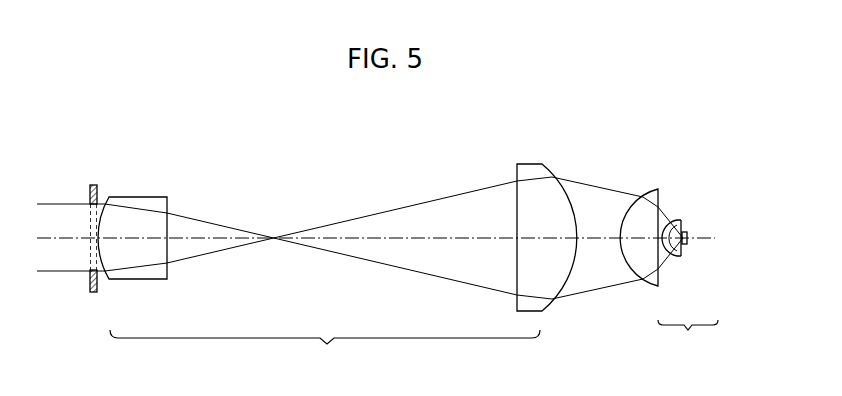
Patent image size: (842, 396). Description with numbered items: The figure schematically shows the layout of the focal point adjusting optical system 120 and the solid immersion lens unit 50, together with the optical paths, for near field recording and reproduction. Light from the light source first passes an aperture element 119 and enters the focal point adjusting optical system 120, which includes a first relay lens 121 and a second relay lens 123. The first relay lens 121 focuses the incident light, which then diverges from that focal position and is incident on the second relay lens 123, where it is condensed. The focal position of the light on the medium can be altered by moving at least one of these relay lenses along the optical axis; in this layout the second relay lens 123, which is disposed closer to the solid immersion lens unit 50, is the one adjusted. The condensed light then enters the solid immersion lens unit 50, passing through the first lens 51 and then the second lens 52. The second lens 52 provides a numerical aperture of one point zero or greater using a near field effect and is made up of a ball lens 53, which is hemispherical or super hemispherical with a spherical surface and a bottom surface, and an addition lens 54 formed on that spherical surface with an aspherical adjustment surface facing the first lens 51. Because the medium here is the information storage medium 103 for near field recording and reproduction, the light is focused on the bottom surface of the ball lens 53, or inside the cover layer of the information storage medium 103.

The solid immersion lens unit 50 is at (672, 243).
The first lens 51 is at (650, 193).
The second lens 52 is at (685, 285).
The ball lens 53 is at (679, 257).
The addition lens 54 is at (666, 257).
The information storage medium for near field recording/reproduction 103 is at (683, 192).
The aperture stop 119 is at (92, 185).
The focal point adjusting optical system 120 is at (337, 240).
The first relay lens 121 is at (143, 195).
The second relay lens 123 is at (527, 164).